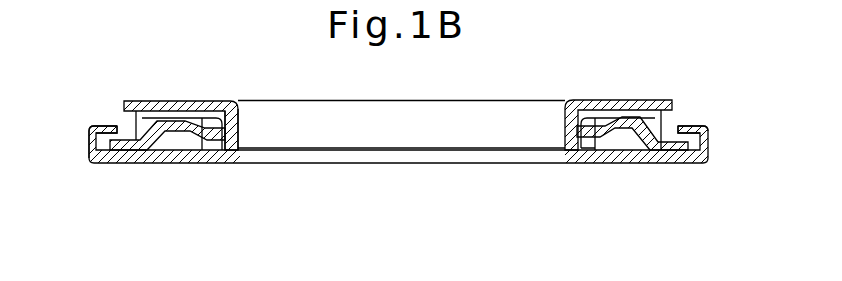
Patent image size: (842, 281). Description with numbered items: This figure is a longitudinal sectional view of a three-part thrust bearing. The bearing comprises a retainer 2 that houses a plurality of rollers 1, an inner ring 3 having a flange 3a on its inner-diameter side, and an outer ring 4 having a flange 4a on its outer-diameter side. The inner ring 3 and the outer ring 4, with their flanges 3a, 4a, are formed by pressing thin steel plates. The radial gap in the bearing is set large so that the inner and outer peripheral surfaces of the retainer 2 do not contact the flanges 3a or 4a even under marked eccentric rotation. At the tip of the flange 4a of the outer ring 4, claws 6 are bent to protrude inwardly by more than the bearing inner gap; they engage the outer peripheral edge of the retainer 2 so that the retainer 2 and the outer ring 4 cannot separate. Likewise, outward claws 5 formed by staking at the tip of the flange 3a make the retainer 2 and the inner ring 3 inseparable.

The roller 1 is at (152, 117).
The retainer 2 is at (647, 150).
The inner ring 3 is at (191, 98).
The flange 3a is at (224, 121).
The outer ring 4 is at (134, 168).
The flange 4a is at (91, 149).
The outward claw 5 is at (223, 163).
The claw 6 is at (106, 125).